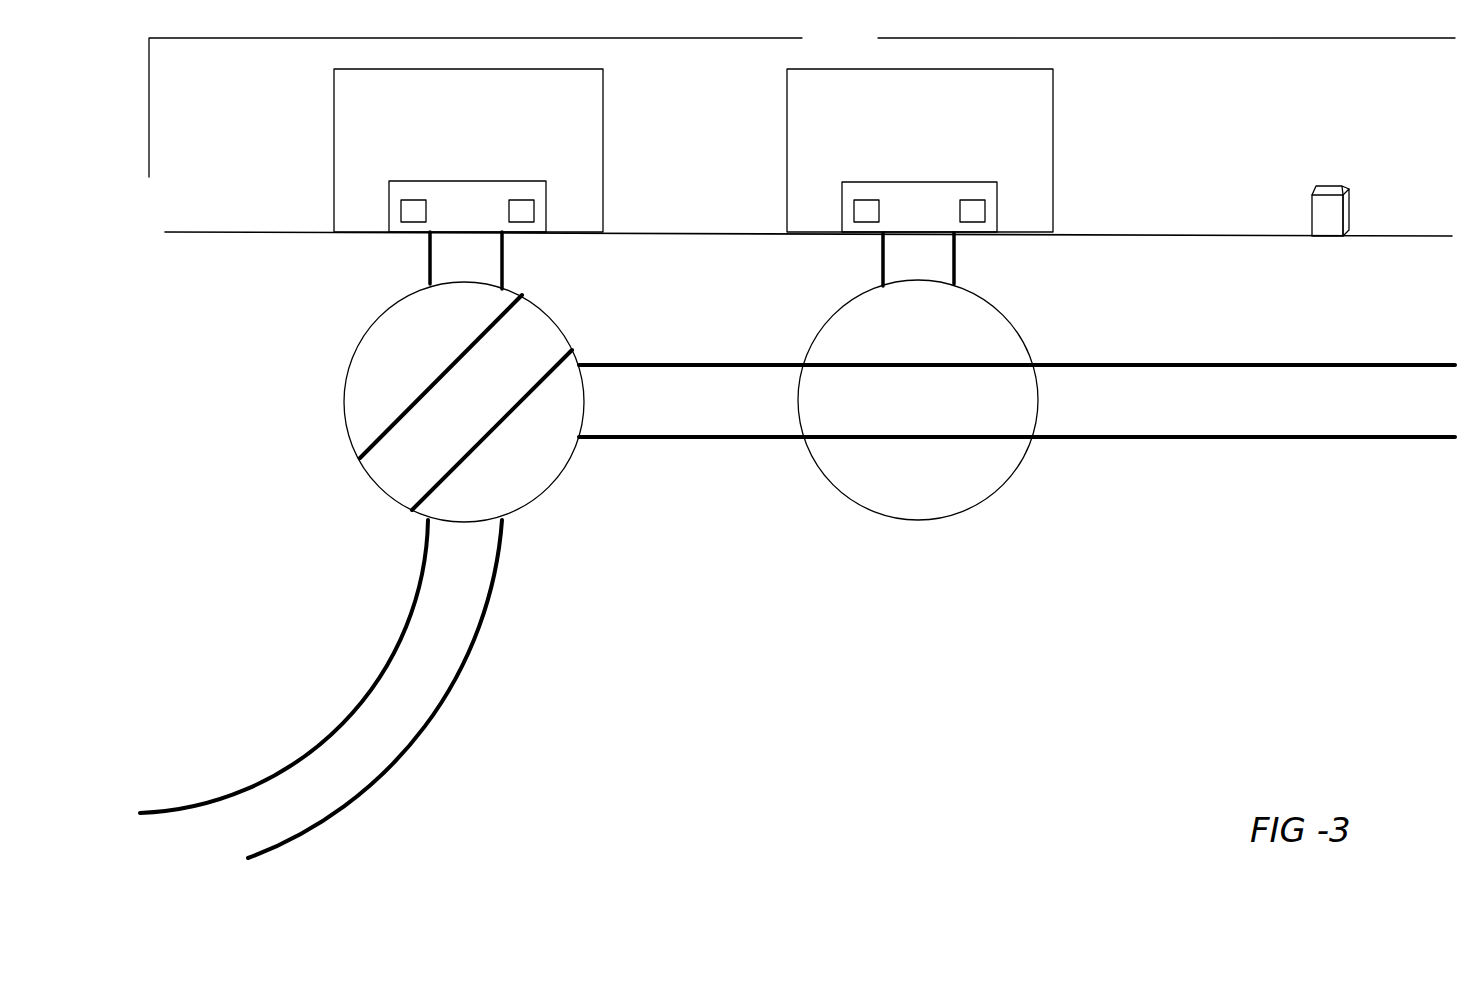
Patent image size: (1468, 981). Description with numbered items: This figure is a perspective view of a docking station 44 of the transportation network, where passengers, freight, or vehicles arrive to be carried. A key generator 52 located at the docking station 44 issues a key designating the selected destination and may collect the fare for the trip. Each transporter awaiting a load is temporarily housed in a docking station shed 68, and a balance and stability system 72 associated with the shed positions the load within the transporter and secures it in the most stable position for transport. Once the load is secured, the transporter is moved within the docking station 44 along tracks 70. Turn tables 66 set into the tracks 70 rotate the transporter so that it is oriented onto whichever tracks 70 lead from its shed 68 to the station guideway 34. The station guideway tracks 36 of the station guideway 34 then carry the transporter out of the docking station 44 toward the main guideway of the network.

The station guideway 34 is at (424, 683).
The station guideway tracks 36 is at (455, 638).
The docking station 44 is at (802, 98).
The key generator 52 is at (1310, 209).
The turn tables 66 is at (534, 483).
The docking station shed 68 is at (693, 150).
The tracks 70 is at (447, 268).
The balance and stability system 72 is at (693, 206).